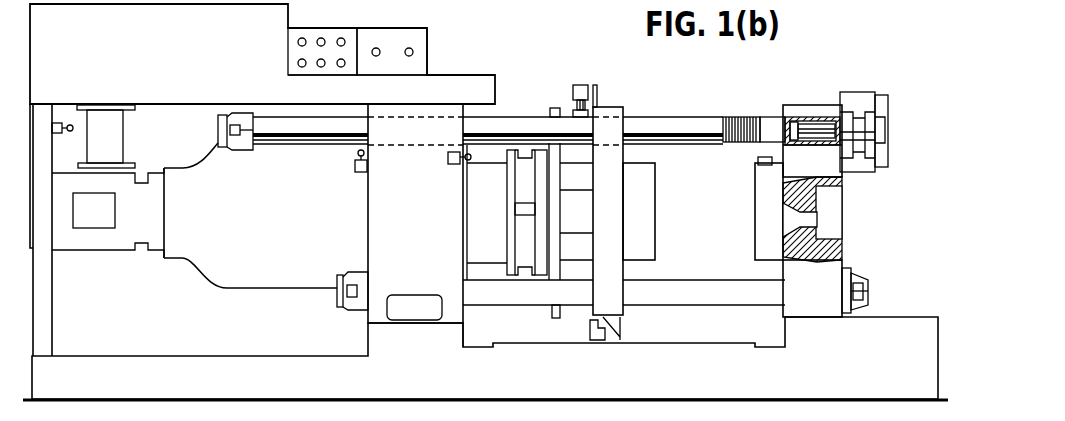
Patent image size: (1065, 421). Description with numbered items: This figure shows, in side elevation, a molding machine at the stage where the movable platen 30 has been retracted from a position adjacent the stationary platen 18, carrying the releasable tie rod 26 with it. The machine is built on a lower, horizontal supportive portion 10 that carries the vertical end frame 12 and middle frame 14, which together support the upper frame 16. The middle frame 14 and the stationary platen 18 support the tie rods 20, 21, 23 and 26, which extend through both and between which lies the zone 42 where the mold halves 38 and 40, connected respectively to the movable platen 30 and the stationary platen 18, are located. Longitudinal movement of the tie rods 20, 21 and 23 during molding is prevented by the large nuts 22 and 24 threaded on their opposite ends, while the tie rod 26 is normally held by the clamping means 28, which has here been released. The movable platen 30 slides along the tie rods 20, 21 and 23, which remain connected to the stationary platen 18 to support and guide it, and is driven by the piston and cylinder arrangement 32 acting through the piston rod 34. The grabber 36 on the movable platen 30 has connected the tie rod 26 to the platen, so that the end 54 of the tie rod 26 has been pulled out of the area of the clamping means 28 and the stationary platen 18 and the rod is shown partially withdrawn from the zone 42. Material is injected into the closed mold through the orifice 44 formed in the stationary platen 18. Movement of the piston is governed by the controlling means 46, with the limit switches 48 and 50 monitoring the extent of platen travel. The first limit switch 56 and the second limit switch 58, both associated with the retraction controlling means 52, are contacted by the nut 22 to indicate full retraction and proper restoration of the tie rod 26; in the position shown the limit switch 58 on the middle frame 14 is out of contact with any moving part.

The lower horizontal supportive portion 10 is at (418, 369).
The end frame 12 is at (45, 272).
The middle frame 14 is at (412, 234).
The upper frame 16 is at (152, 57).
The stationary platen 18 is at (822, 294).
The tie rod 20 is at (767, 125).
The tie rod 21 is at (737, 281).
The nut 22 is at (218, 125).
The tie rod 23 is at (680, 297).
The nut 24 is at (878, 175).
The releasable tie rod 26 is at (318, 145).
The clamping means 28 is at (860, 90).
The movable platen 30 is at (617, 219).
The piston and cylinder arrangement 32 is at (259, 229).
The piston rod 34 is at (492, 219).
The grabber 36 is at (573, 90).
The mold half 38 is at (649, 219).
The mold half 40 is at (777, 219).
The zone 42 is at (735, 172).
The orifice 44 is at (828, 217).
The controlling means 46 is at (410, 68).
The limit switch 48 is at (447, 165).
The limit switch 50 is at (775, 159).
The retraction controlling means 52 is at (293, 53).
The end of releasable tie rod 54 is at (741, 120).
The first limit switch 56 is at (58, 121).
The second limit switch 58 is at (355, 171).